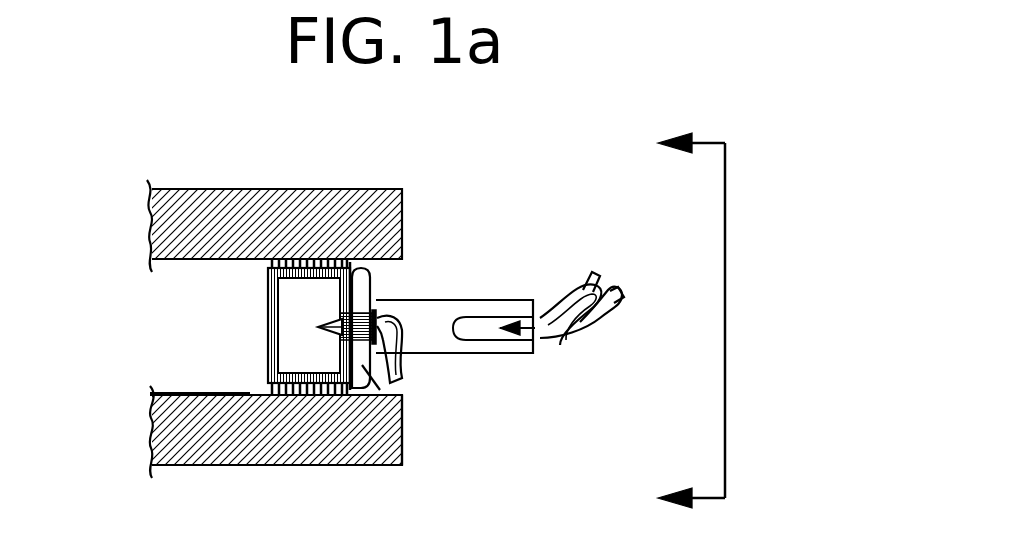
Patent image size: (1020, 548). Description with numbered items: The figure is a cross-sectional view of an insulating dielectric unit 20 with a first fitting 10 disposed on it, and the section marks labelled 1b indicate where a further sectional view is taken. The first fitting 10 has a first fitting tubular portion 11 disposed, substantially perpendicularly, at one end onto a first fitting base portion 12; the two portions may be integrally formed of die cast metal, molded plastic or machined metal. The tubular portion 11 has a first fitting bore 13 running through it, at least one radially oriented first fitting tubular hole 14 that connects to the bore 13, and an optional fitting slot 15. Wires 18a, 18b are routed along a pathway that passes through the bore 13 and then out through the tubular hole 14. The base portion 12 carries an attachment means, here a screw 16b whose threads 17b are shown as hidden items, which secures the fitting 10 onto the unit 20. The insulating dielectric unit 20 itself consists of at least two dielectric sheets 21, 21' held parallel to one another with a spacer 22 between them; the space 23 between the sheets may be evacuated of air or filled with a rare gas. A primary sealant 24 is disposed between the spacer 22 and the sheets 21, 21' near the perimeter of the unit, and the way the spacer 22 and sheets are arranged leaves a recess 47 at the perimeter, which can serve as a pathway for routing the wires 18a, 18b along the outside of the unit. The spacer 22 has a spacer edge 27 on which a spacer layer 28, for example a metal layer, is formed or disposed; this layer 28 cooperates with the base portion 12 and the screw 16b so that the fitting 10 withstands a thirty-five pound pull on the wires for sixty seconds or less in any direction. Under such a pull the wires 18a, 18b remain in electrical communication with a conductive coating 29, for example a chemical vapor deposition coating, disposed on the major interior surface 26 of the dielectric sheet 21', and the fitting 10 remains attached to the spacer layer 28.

The first fitting 10 is at (503, 230).
The first fitting tubular portion 11 is at (455, 353).
The first fitting base portion 12 is at (380, 390).
The first fitting bore 13 is at (565, 343).
The first fitting tubular hole 14 is at (374, 316).
The fitting slot 15 is at (468, 353).
The screw 16b is at (376, 312).
The threads 17b is at (362, 285).
The wire 18a is at (590, 272).
The wire 18b is at (616, 287).
The insulating dielectric unit 20 is at (443, 136).
The dielectric sheet 21 is at (274, 206).
The dielectric sheet 21' is at (277, 461).
The spacer 22 is at (268, 296).
The space 23 is at (232, 340).
The primary sealant 24 is at (310, 260).
The major interior surface 26 is at (150, 438).
The spacer edge 27 is at (352, 262).
The spacer layer 28 is at (370, 400).
The conductive coating 29 is at (215, 395).
The recess 47 is at (364, 318).
The section line 1b is at (657, 322).